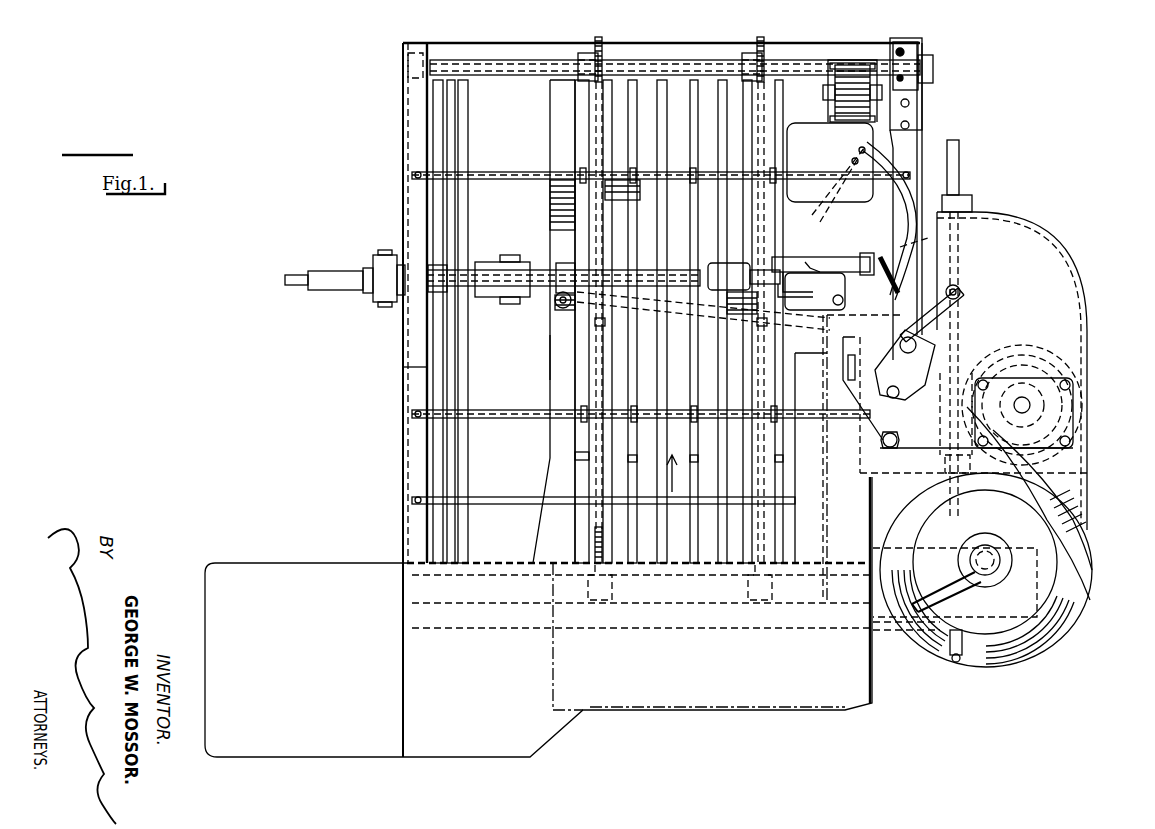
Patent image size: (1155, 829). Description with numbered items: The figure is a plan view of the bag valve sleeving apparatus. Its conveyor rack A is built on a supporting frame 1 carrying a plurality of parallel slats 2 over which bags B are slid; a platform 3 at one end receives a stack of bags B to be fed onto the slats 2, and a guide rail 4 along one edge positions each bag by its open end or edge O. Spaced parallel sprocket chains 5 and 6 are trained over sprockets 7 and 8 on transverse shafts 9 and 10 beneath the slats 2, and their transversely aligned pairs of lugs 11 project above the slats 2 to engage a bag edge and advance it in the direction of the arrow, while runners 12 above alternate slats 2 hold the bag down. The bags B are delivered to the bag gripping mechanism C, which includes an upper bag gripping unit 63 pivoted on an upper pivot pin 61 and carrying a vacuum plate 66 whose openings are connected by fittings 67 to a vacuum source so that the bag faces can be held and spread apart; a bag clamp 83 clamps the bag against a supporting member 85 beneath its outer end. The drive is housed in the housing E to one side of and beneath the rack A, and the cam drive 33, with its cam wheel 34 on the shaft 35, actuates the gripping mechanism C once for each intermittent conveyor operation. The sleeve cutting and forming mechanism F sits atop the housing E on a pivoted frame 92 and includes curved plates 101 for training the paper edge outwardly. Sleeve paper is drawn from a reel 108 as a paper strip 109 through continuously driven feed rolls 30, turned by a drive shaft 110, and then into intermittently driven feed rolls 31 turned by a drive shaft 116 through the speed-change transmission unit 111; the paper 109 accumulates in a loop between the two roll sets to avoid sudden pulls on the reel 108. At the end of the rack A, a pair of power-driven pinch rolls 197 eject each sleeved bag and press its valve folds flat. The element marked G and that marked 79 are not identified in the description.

The supporting frame 1 is at (403, 443).
The slats 2 is at (632, 130).
The platform 3 is at (538, 739).
The guide rail 4 is at (874, 645).
The sprocket chain 5 is at (596, 104).
The sprocket chain 6 is at (765, 106).
The sprockets 7 is at (603, 42).
The sprockets 8 is at (610, 593).
The shaft 9 is at (520, 74).
The shaft 10 is at (492, 576).
The lugs 11 is at (595, 321).
The runners 12 is at (572, 455).
The feed rolls 30 is at (983, 464).
The feed rolls 31 is at (840, 374).
The cam drive 33 is at (1071, 380).
The cam wheel 34 is at (1035, 349).
The shaft 35 is at (1048, 366).
The upper pivot pin 61 is at (748, 255).
The upper bag gripping unit 63 is at (814, 249).
The vacuum plate 66 is at (820, 312).
The fittings 67 is at (836, 300).
The lever 79 is at (885, 262).
The bag clamp 83 is at (556, 301).
The supporting member 85 is at (549, 353).
The frame 92 is at (905, 385).
The curved plates 101 is at (947, 291).
The reel 108 is at (1040, 537).
The paper strip 109 is at (1035, 499).
The drive shaft 110 is at (968, 511).
The speed-change transmission unit 111 is at (1072, 630).
The drive shaft 116 is at (918, 454).
The pinch rolls 197 is at (852, 68).
The conveyor rack A is at (618, 352).
The bags B is at (551, 198).
The bag gripping mechanism C is at (665, 270).
The housing E is at (1073, 264).
The sleeve cutting and forming mechanism F is at (970, 352).
The guide G is at (912, 185).
The open end O is at (866, 722).